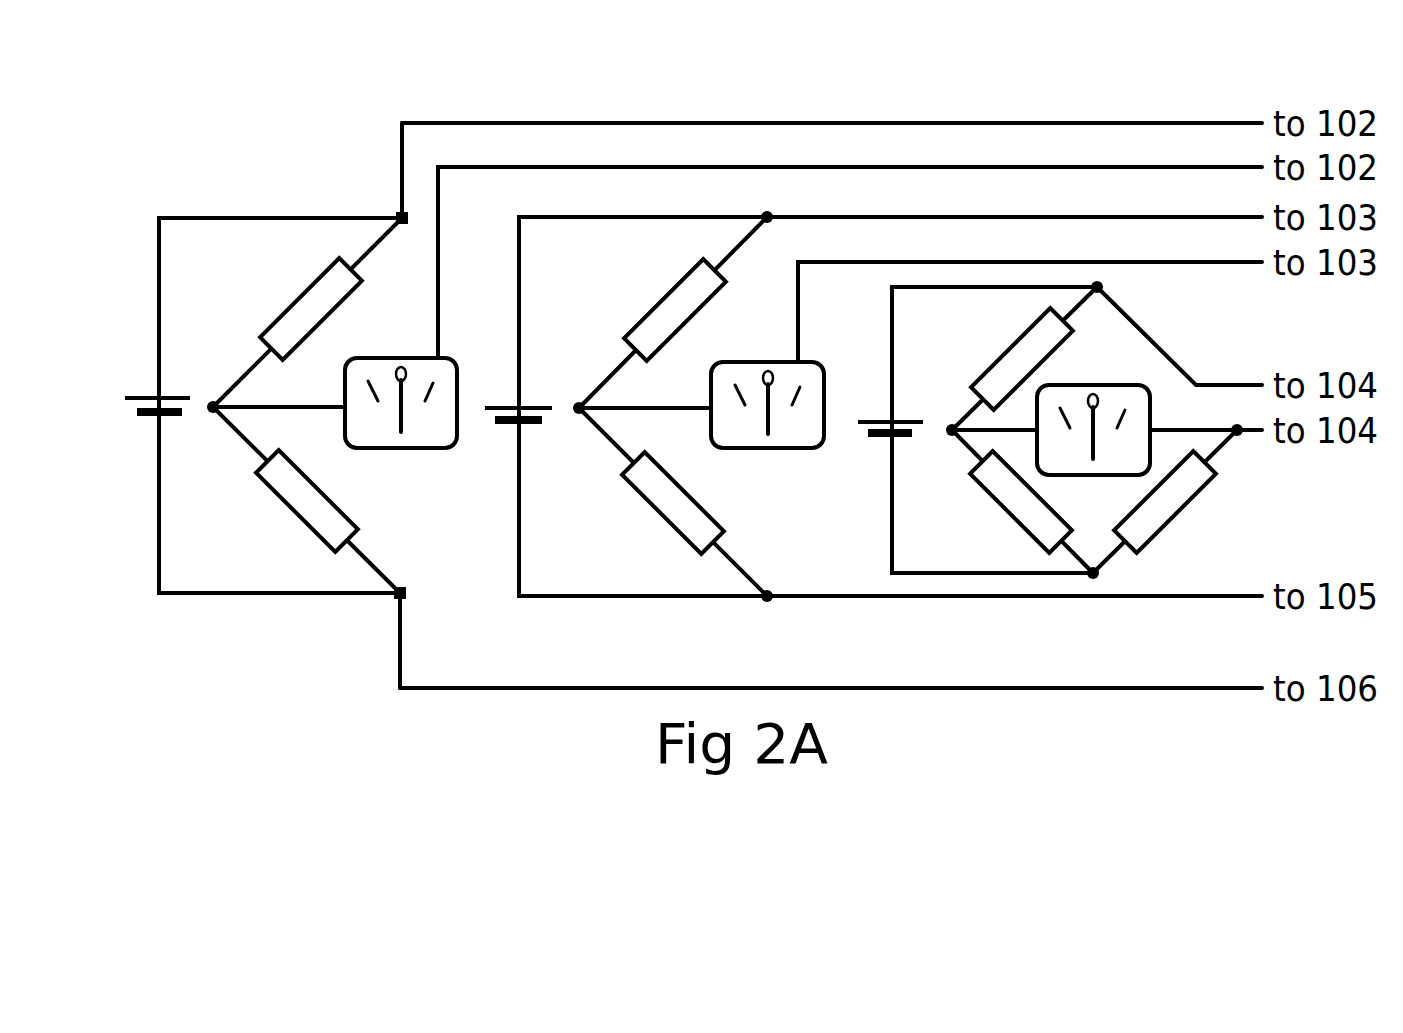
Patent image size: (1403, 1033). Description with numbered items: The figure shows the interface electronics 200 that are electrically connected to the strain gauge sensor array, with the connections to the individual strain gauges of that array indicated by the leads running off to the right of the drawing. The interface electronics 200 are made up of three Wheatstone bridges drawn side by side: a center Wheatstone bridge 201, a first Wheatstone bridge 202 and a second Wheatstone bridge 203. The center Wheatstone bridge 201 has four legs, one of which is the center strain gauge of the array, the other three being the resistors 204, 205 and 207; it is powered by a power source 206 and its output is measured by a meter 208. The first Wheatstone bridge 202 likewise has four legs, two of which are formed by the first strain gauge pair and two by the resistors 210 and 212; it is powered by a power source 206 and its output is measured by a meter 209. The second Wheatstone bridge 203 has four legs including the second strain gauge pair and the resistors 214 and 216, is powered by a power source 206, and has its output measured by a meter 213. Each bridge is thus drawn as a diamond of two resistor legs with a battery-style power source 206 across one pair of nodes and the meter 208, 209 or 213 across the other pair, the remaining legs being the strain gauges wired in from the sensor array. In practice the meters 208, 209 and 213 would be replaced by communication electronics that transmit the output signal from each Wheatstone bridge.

The interface electronics 200 is at (305, 182).
The center Wheatstone bridge 201 is at (882, 475).
The first Wheatstone bridge 202 is at (503, 477).
The second Wheatstone bridge 203 is at (243, 608).
The resistor 204 is at (1157, 532).
The resistor 205 is at (1045, 528).
The power source 206 is at (171, 420).
The resistor 207 is at (1035, 348).
The meter 208 is at (1107, 385).
The meter 209 is at (730, 450).
The resistor 210 is at (688, 520).
The resistor 212 is at (688, 297).
The meter 213 is at (365, 450).
The resistor 214 is at (320, 517).
The resistor 216 is at (330, 290).